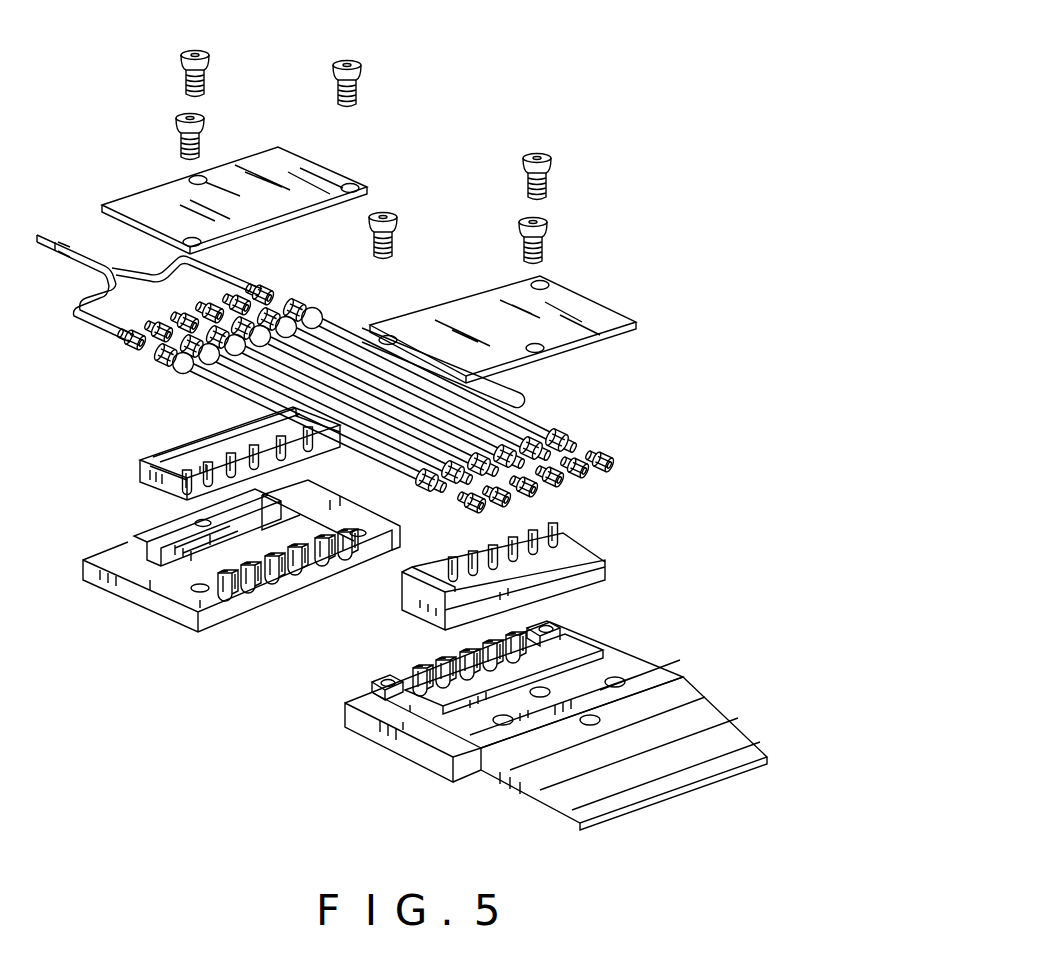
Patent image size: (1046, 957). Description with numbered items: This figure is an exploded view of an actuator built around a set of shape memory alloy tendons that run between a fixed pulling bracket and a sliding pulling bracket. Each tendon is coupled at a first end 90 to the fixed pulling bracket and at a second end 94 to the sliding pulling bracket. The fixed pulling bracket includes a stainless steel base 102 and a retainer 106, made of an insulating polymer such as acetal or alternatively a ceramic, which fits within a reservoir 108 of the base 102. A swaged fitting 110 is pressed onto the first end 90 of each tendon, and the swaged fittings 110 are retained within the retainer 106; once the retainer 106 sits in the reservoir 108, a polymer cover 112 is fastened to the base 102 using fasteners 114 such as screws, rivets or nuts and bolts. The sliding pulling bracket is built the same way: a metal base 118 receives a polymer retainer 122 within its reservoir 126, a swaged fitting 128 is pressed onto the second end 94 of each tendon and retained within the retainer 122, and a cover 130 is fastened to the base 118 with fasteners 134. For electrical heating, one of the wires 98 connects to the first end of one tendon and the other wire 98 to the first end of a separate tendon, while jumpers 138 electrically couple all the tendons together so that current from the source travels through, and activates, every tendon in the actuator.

The first end 90 is at (327, 325).
The second end 94 is at (520, 407).
The wires 98 is at (118, 250).
The base 102 is at (155, 603).
The retainer 106 is at (150, 483).
The reservoir 108 is at (192, 561).
The swaged fitting 110 is at (312, 310).
The cover 112 is at (300, 177).
The fasteners 114 is at (202, 140).
The base 118 is at (573, 757).
The retainer 122 is at (565, 562).
The reservoir 126 is at (557, 673).
The swaged fitting 128 is at (565, 432).
The cover 130 is at (578, 308).
The fasteners 134 is at (522, 248).
The jumpers 138 is at (237, 302).